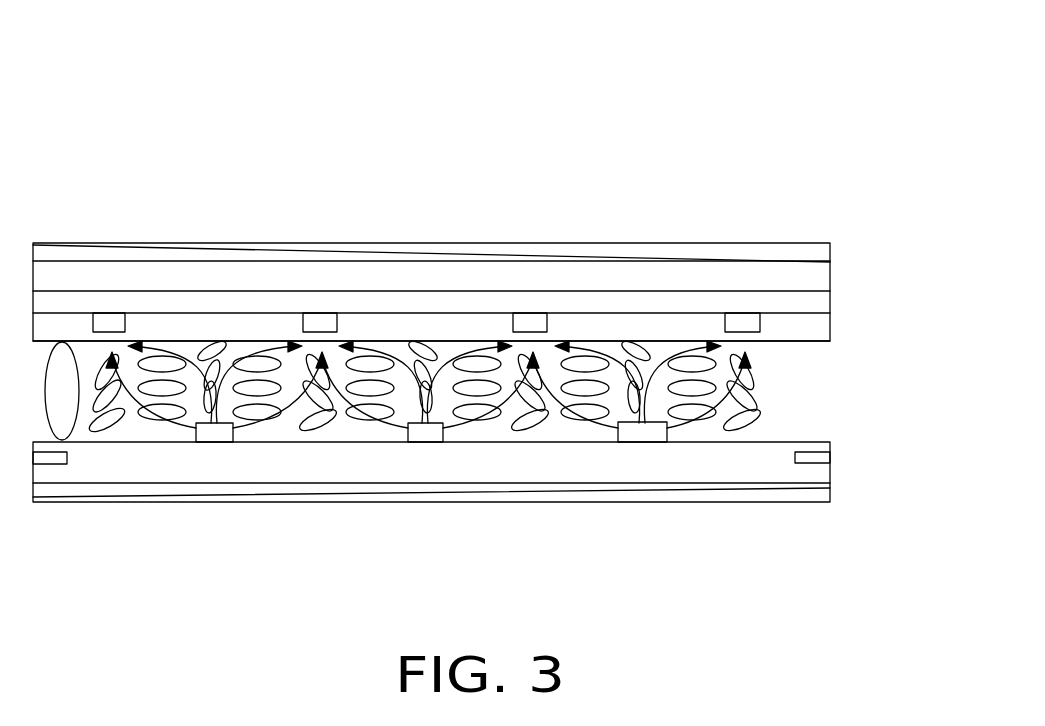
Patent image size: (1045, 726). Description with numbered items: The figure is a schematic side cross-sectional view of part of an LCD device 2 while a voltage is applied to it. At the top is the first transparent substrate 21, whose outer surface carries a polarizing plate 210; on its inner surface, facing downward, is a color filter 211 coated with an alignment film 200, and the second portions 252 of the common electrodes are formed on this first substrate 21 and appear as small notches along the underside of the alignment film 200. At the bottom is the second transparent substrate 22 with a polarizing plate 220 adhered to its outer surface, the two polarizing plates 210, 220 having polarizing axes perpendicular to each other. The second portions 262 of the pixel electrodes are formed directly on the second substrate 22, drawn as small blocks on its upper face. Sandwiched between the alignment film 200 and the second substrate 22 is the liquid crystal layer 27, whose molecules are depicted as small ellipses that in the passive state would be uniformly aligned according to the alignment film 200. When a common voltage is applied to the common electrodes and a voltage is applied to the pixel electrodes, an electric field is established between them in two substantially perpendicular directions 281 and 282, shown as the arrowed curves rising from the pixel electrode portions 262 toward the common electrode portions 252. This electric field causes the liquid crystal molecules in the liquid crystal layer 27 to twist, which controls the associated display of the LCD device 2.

The LCD device 2 is at (517, 90).
The polarizing plate 210 is at (810, 257).
The first transparent substrate 21 is at (818, 278).
The color filter 211 is at (815, 307).
The alignment film 200 is at (812, 332).
The second portions of common electrode 252 is at (105, 327).
The second transparent substrate 22 is at (822, 470).
The polarizing plate 220 is at (817, 488).
The second portions of pixel electrode 262 is at (210, 433).
The electric field direction 281 is at (697, 352).
The electric field direction 282 is at (694, 421).
The liquid crystal layer 27 is at (740, 398).